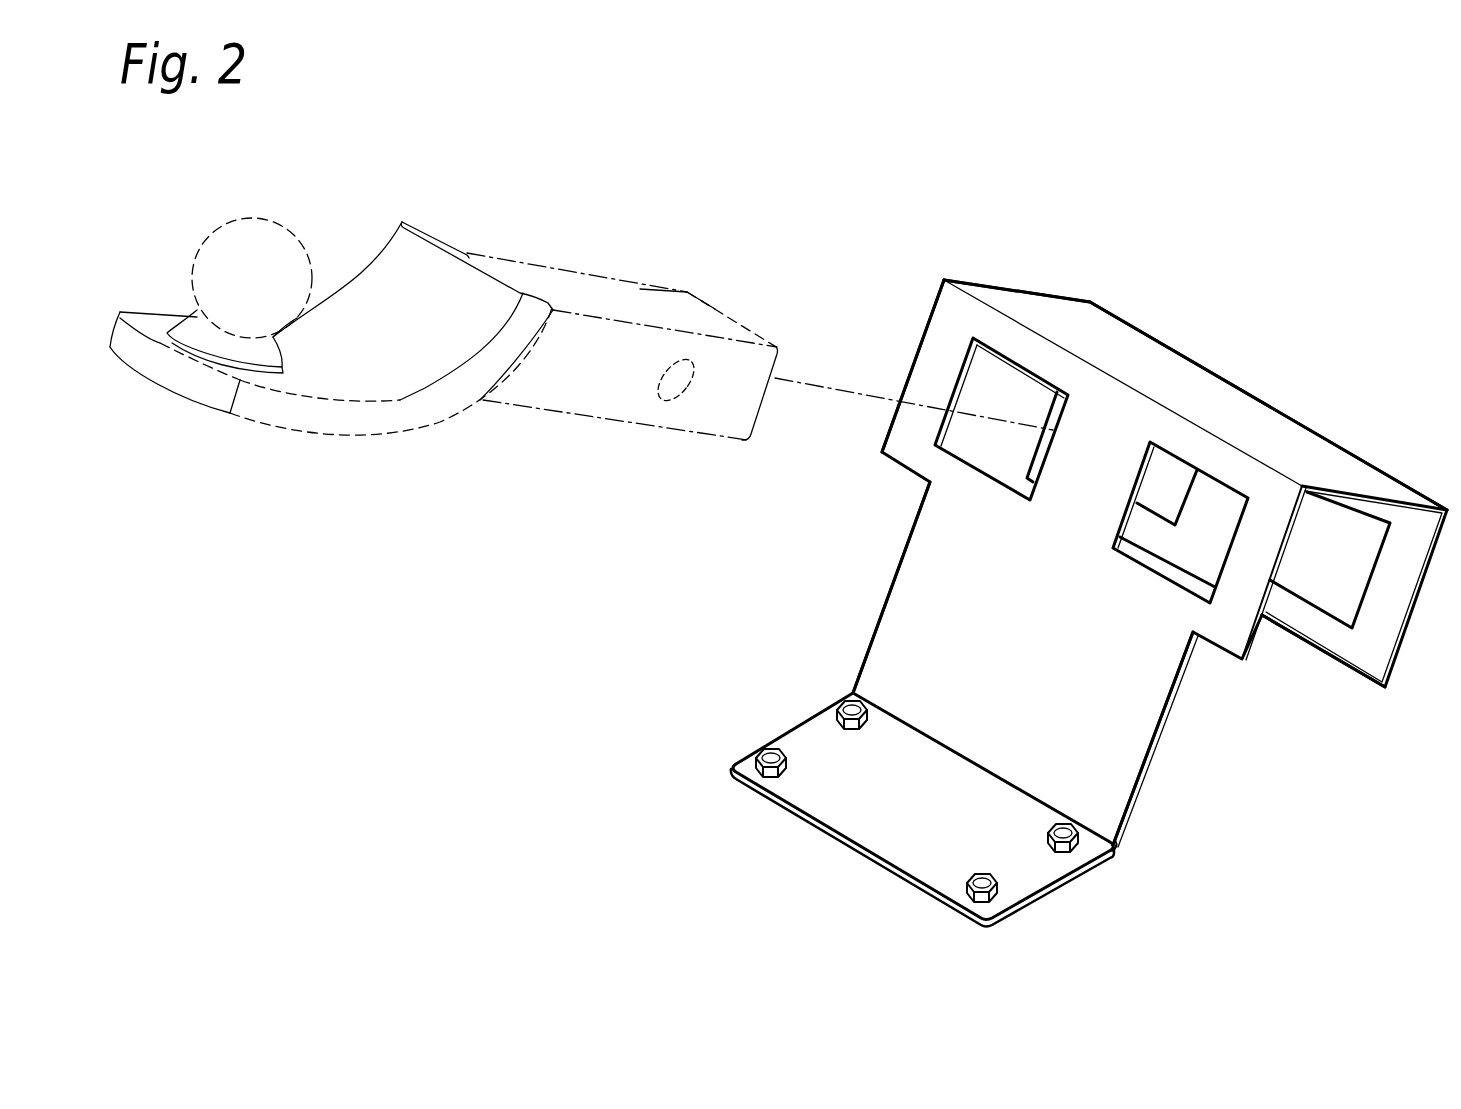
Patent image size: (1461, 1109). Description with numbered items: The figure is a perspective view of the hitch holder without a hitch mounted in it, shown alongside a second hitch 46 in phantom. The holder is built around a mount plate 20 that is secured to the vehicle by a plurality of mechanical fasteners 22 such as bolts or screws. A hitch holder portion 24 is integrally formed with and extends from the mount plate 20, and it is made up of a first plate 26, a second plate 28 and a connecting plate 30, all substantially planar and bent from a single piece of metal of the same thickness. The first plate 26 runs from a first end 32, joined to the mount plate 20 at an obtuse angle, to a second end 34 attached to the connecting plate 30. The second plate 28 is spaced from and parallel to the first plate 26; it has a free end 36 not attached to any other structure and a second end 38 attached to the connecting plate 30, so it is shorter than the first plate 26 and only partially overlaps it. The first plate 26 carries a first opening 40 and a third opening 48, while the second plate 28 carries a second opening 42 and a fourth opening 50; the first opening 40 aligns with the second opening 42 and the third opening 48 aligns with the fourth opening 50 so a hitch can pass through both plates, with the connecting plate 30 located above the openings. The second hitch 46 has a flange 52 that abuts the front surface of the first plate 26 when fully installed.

The mount plate 20 is at (843, 817).
The mechanical fasteners 22 is at (846, 703).
The hitch holder portion 24 is at (923, 264).
The first plate 26 is at (1135, 712).
The second plate 28 is at (1323, 637).
The connecting plate 30 is at (1117, 340).
The first end 32 is at (1114, 846).
The second end 34 is at (945, 278).
The free end 36 is at (1368, 680).
The second end 38 is at (1089, 303).
The first opening 40 is at (1235, 487).
The second opening 42 is at (1383, 550).
The second hitch 46 is at (382, 250).
The third opening 48 is at (1007, 353).
The fourth opening 50 is at (1185, 493).
The flange 52 is at (436, 233).